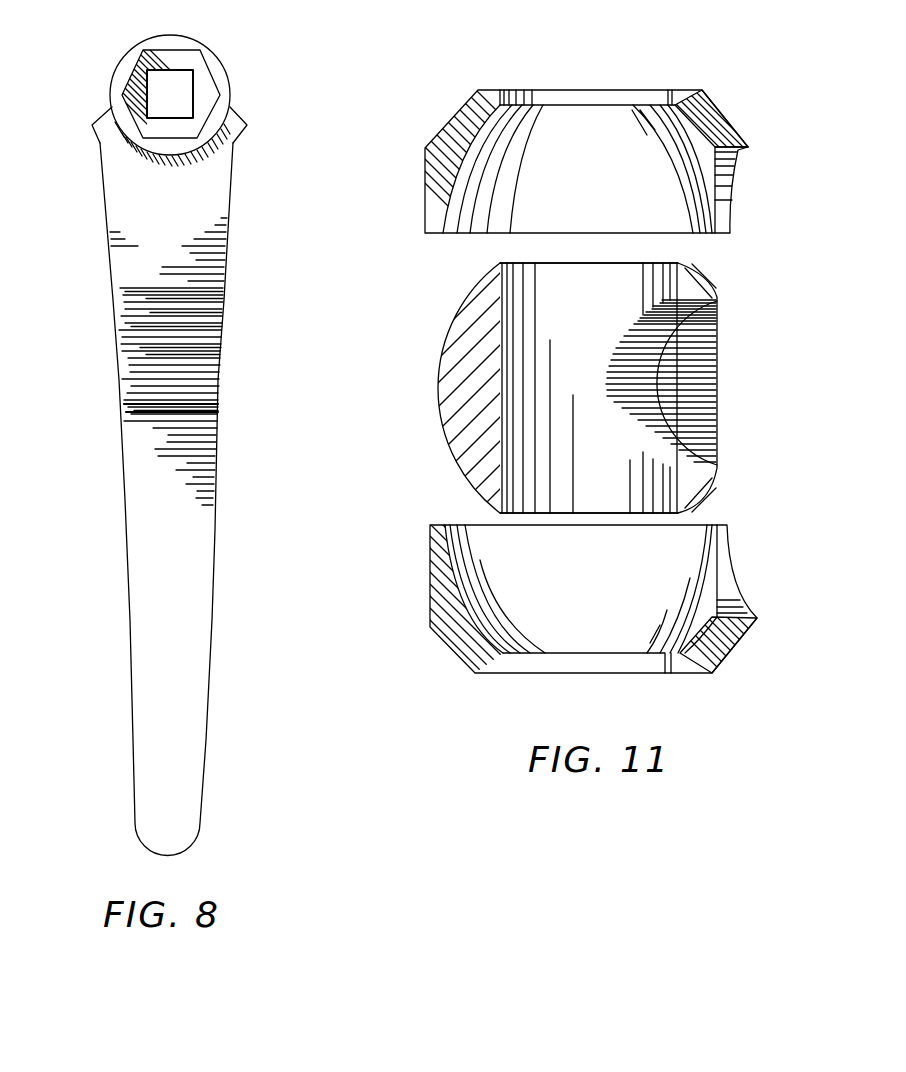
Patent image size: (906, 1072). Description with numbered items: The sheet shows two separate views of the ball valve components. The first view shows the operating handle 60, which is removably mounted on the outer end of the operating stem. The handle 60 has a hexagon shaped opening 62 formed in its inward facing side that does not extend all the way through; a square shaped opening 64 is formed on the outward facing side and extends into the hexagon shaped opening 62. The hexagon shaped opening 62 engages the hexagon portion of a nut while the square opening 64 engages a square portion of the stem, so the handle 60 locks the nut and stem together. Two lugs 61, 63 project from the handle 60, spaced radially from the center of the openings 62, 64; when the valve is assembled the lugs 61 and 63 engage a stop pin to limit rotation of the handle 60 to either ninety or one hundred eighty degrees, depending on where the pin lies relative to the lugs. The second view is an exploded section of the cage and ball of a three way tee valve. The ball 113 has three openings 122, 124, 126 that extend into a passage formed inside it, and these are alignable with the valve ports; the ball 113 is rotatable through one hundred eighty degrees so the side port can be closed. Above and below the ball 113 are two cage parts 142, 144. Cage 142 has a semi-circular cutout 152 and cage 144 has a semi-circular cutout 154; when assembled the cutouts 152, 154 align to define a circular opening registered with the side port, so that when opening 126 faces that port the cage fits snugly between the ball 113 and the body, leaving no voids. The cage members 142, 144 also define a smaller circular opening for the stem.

In FIG. 8, the operating handle 60 is at (260, 607).
In FIG. 8, the lug 61 is at (90, 133).
In FIG. 8, the hexagon shaped opening 62 is at (215, 103).
In FIG. 8, the lug 63 is at (245, 136).
In FIG. 8, the square shaped opening 64 is at (195, 77).
In FIG. 11, the ball 113 is at (538, 387).
In FIG. 11, the opening 122 is at (622, 268).
In FIG. 11, the opening 124 is at (608, 510).
In FIG. 11, the opening 126 is at (715, 437).
In FIG. 11, the cage 142 is at (460, 118).
In FIG. 11, the cage 144 is at (430, 615).
In FIG. 11, the semi-circular cutout 152 is at (740, 165).
In FIG. 11, the semi-circular cutout 154 is at (740, 598).